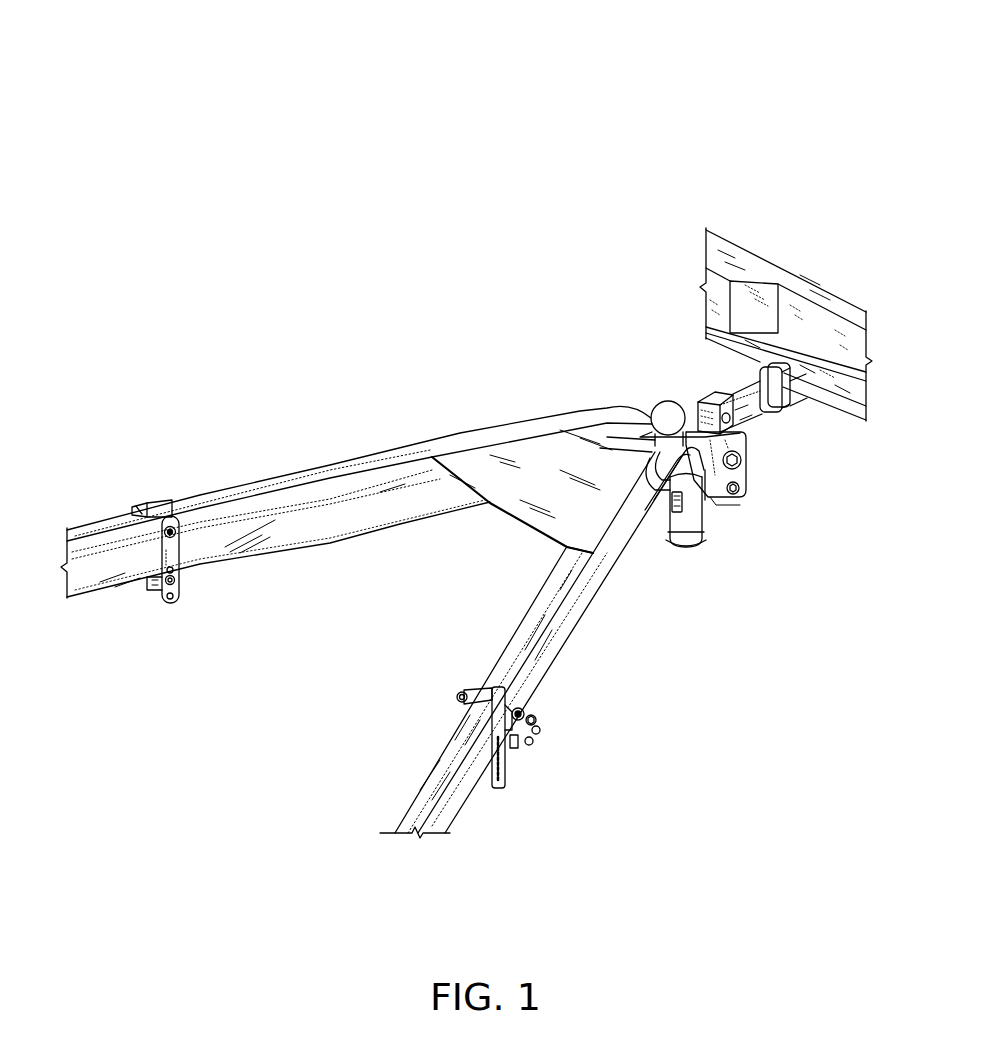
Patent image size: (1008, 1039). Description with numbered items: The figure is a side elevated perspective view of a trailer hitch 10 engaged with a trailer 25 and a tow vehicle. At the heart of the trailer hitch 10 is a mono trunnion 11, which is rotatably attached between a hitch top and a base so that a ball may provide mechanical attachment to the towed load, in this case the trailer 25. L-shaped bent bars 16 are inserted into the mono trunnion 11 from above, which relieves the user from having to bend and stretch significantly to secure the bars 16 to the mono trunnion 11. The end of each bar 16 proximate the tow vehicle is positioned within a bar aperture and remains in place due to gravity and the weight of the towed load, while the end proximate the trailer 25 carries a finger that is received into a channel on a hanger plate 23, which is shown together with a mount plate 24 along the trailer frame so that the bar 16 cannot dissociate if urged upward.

The trailer hitch 10 is at (231, 72).
The mono trunnion 11 is at (693, 508).
The L-shaped bent bar 16 is at (358, 465).
The hanger plate 23 is at (499, 783).
The mount plate 24 is at (170, 604).
The trailer 25 is at (316, 528).